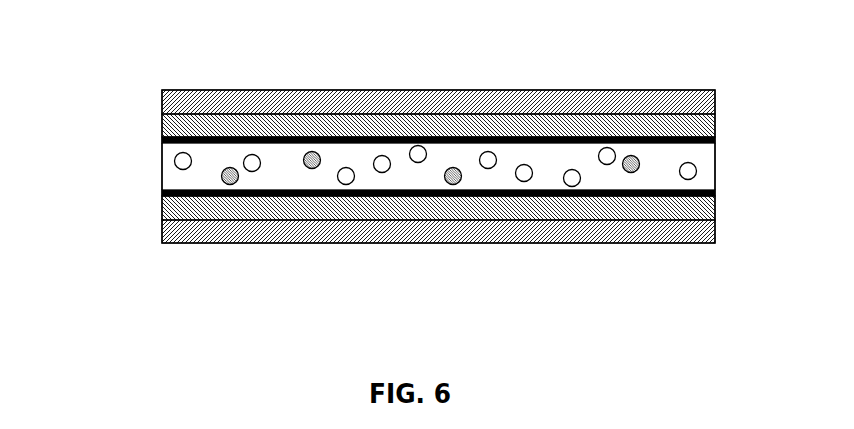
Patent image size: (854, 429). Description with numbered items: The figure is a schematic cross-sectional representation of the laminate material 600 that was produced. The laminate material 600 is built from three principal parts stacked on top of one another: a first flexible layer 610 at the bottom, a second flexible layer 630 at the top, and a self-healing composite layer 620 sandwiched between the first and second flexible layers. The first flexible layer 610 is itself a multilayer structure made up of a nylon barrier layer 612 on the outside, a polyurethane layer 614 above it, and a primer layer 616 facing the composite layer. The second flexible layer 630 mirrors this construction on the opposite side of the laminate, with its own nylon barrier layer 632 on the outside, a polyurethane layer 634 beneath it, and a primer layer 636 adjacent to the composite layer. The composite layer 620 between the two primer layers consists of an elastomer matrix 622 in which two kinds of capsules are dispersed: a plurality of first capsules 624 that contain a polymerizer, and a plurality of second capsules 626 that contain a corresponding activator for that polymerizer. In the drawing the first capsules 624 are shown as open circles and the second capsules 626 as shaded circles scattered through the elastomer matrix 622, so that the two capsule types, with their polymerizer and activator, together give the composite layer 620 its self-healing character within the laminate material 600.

The laminate material 600 is at (237, 55).
The first flexible layer 610 is at (152, 187).
The nylon barrier layer 612 is at (603, 243).
The polyurethane layer 614 is at (716, 211).
The primer layer 616 is at (716, 195).
The self-healing composite layer 620 is at (161, 169).
The elastomer matrix 622 is at (345, 163).
The first capsules 624 is at (253, 172).
The second capsules 626 is at (313, 170).
The second flexible layer 630 is at (152, 90).
The nylon barrier layer 632 is at (600, 93).
The polyurethane layer 634 is at (716, 127).
The primer layer 636 is at (716, 143).